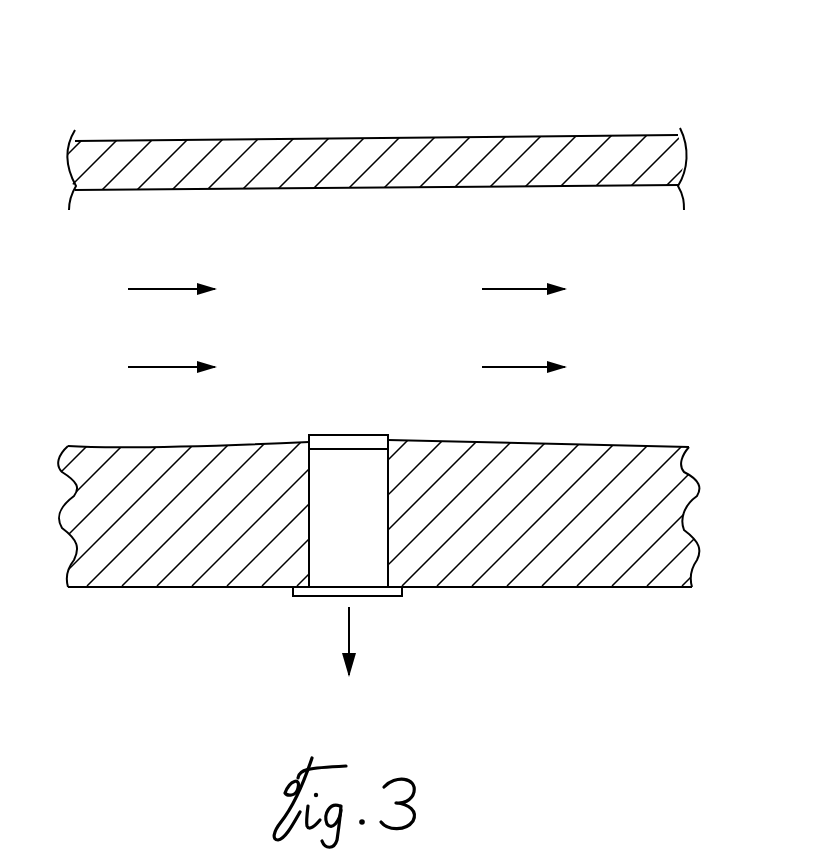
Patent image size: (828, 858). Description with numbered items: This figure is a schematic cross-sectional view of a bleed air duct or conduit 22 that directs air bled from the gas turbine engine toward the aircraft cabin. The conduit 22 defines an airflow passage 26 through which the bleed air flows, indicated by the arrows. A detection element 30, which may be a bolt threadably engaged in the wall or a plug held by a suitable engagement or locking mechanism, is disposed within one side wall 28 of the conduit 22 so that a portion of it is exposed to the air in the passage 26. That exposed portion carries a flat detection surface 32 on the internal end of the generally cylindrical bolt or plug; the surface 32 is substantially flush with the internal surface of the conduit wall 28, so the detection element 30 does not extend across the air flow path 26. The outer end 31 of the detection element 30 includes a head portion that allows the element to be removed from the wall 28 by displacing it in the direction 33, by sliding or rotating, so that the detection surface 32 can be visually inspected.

The bleed air conduit 22 is at (445, 110).
The airflow passage 26 is at (376, 323).
The conduit wall 28 is at (545, 535).
The detection element 30 is at (300, 610).
The outer end 31 is at (382, 596).
The detection surface 32 is at (353, 430).
The direction 33 is at (349, 640).